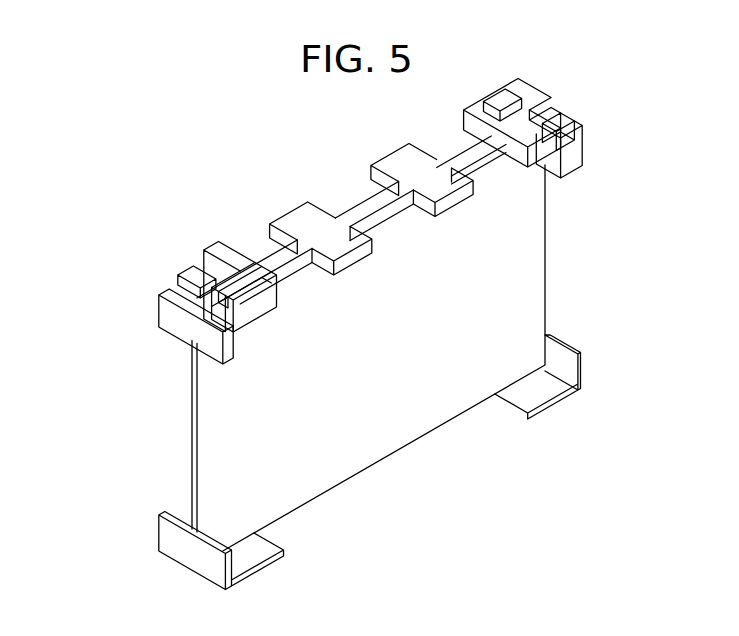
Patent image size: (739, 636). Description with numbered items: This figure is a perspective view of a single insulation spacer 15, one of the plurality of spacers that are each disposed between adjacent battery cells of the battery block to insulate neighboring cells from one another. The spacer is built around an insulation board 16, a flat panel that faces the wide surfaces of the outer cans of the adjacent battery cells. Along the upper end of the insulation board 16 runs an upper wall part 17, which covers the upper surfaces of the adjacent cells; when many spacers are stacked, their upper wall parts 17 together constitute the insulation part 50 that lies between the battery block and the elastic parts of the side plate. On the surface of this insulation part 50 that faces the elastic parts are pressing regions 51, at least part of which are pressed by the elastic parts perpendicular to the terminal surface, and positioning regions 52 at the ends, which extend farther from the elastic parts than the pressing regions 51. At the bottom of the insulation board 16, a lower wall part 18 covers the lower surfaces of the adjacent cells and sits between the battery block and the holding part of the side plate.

The insulation spacer 15 is at (615, 487).
The insulation board 16 is at (510, 265).
The upper wall part 17 is at (300, 214).
The lower wall part 18 is at (527, 390).
The insulation part 50 is at (303, 222).
The pressing region 51 is at (189, 275).
The positioning region 52 is at (163, 287).